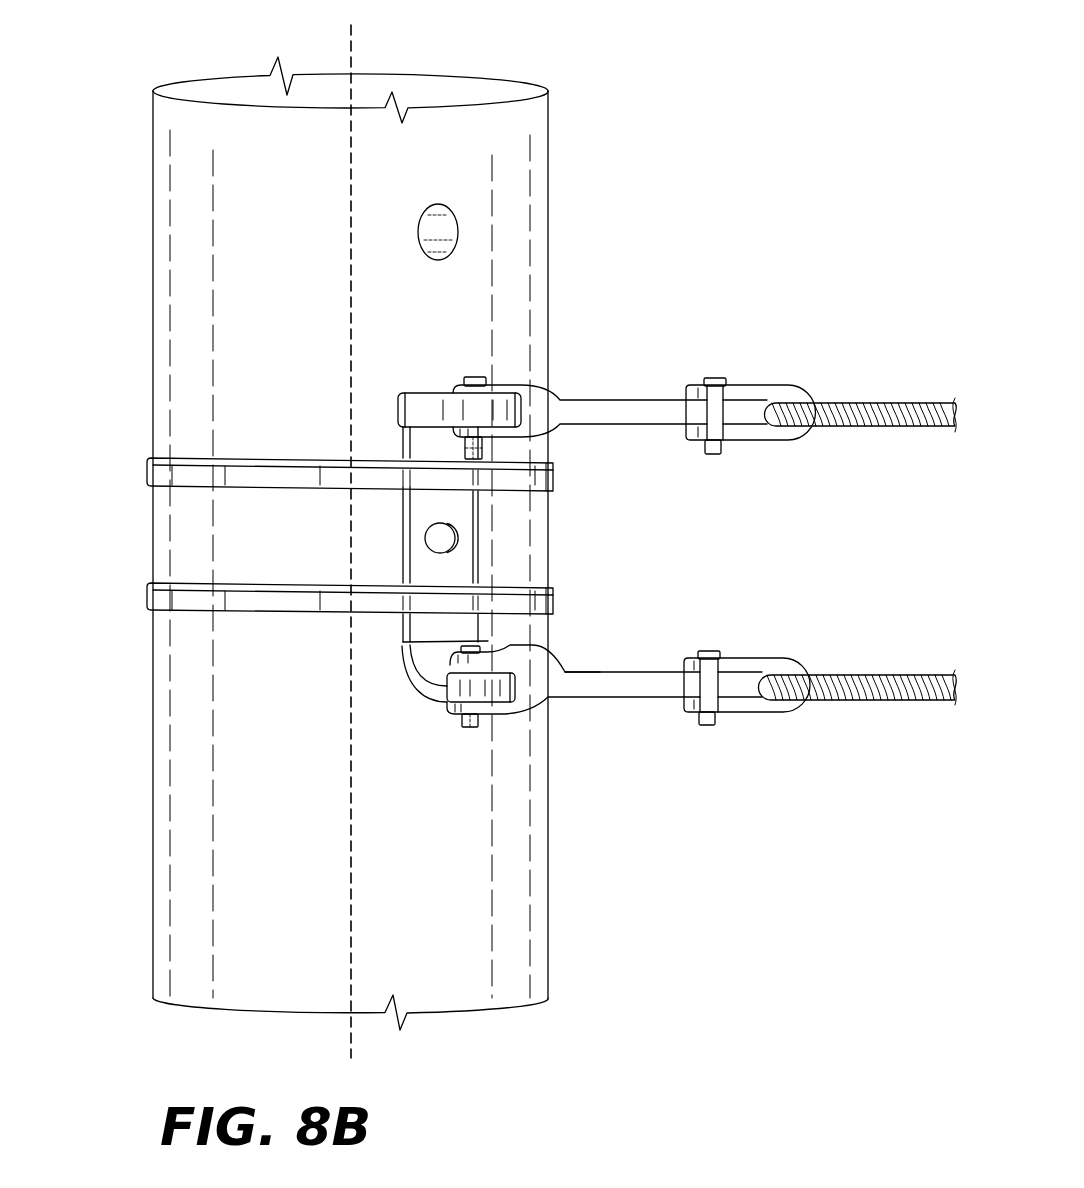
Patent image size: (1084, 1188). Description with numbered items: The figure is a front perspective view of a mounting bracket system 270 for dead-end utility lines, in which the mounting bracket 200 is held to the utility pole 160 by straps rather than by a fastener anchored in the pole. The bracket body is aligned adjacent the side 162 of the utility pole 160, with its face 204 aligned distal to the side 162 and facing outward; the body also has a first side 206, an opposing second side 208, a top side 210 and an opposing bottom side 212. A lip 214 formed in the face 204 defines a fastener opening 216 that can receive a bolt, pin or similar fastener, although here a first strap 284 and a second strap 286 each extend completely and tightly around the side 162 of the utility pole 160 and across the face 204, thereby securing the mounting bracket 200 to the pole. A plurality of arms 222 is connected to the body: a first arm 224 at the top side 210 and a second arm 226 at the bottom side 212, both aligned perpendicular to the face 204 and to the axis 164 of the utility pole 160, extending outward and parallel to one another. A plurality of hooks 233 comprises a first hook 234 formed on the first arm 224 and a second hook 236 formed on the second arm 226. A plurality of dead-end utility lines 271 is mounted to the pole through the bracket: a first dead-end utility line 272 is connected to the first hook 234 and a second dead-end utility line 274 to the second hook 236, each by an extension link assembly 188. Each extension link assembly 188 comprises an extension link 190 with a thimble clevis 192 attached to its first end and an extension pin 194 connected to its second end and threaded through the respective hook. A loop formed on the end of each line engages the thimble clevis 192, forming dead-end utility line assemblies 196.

The utility pole 160 is at (548, 200).
The side 162 is at (480, 313).
The axis 164 is at (351, 53).
The extension link assembly 188 is at (708, 310).
The extension link 190 is at (656, 439).
The thimble clevis 192 is at (834, 457).
The extension pin 194 is at (457, 456).
The dead-end utility line assembly 196 is at (778, 348).
The mounting bracket 200 is at (484, 574).
The face 204 is at (483, 448).
The first side 206 is at (400, 433).
The second side 208 is at (478, 522).
The top side 210 is at (398, 405).
The bottom side 212 is at (405, 676).
The lip 214 is at (433, 521).
The fastener opening 216 is at (440, 547).
The plurality of arms 222 is at (437, 719).
The first arm 224 is at (413, 394).
The second arm 226 is at (418, 687).
The plurality of hooks 233 is at (452, 717).
The first hook 234 is at (473, 380).
The second hook 236 is at (485, 660).
The mounting bracket system 270 is at (137, 276).
The plurality of dead-end utility lines 271 is at (618, 714).
The first dead-end utility line 272 is at (893, 402).
The second dead-end utility line 274 is at (867, 674).
The first strap 284 is at (147, 469).
The second strap 286 is at (147, 596).